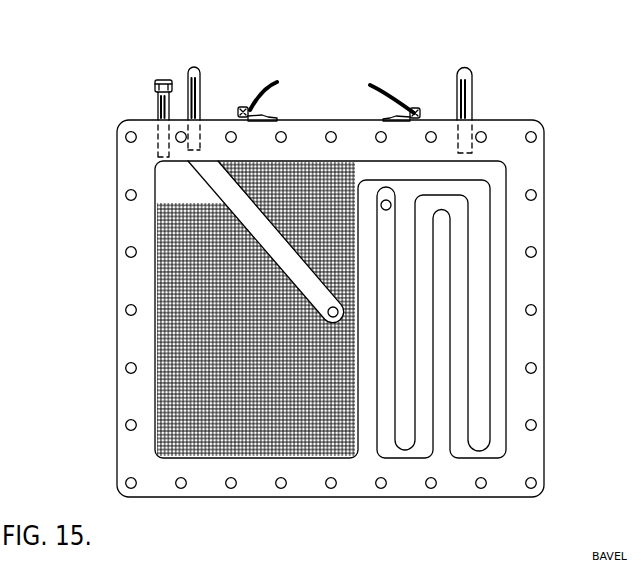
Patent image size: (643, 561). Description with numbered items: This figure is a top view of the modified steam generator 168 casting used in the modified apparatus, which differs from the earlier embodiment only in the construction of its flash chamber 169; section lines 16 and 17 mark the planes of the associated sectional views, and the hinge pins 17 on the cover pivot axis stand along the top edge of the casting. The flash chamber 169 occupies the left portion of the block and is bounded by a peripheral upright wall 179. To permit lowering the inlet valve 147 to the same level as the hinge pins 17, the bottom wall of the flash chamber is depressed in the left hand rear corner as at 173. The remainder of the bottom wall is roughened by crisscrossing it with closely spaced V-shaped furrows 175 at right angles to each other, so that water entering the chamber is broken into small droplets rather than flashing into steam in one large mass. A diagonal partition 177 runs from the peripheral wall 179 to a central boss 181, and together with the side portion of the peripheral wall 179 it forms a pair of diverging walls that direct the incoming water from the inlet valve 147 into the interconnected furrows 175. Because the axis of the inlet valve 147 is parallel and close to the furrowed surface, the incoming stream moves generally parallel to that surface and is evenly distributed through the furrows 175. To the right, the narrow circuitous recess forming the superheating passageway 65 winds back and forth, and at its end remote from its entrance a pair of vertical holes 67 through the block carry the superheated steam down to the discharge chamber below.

The section line 16- 16 is at (108, 308).
The hinge pins 17 is at (178, 114).
The superheating passageway 65 is at (498, 210).
The vertical holes 67 is at (381, 201).
The inlet valve 147 is at (155, 107).
The steam generator 168 is at (116, 260).
The flash chamber 169 is at (155, 379).
The depressed corner of bottom wall 173 is at (173, 182).
The V-shaped furrows 175 is at (163, 408).
The diagonal partition 177 is at (250, 220).
The peripheral upright wall 179 is at (245, 161).
The central boss 181 is at (341, 320).